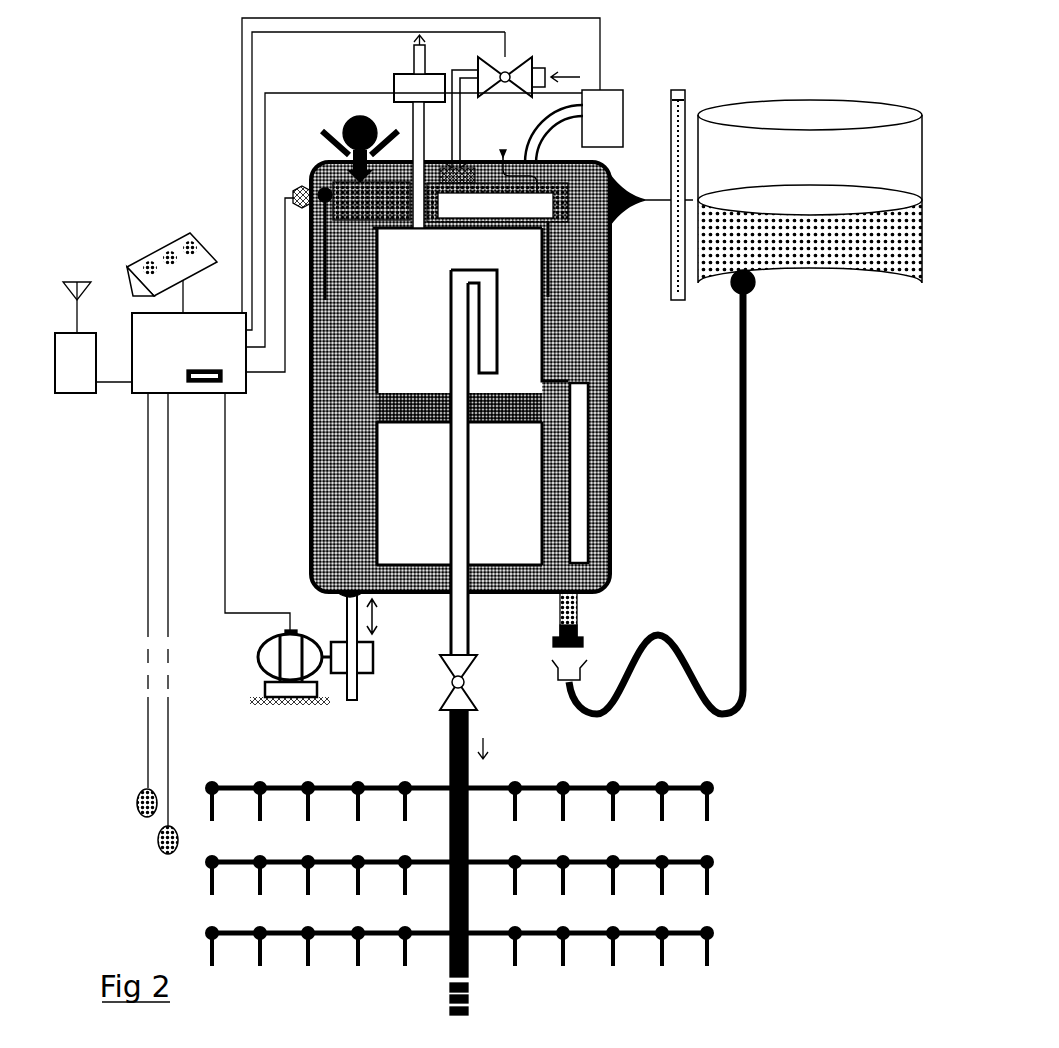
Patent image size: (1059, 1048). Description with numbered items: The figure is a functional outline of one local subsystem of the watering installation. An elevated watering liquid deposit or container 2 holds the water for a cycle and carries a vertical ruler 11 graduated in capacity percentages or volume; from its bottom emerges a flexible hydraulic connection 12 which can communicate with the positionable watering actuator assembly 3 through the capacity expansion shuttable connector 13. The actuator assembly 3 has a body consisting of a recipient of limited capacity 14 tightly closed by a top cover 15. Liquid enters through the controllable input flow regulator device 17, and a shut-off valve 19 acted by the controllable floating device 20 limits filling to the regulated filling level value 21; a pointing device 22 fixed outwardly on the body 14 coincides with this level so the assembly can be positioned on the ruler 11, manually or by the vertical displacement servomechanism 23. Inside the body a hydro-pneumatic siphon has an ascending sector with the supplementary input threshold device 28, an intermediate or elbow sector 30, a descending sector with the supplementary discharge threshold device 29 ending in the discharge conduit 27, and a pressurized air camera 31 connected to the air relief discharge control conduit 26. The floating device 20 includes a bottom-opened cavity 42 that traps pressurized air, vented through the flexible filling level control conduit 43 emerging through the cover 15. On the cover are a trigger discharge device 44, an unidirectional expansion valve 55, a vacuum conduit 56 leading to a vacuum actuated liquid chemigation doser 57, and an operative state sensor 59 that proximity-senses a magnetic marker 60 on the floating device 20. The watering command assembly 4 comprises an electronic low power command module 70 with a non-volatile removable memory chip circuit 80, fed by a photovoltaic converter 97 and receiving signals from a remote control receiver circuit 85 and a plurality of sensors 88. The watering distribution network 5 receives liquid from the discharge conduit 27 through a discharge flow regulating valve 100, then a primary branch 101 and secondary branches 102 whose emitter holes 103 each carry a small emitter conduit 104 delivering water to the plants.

The watering liquid deposit or container 2 is at (810, 191).
The positionable watering actuator assembly 3 is at (616, 473).
The watering command assembly 4 is at (92, 458).
The watering distribution network 5 is at (482, 1004).
The vertical ruler 11 is at (671, 173).
The flexible hydraulic connection 12 is at (662, 492).
The capacity expansion shuttable connector 13 is at (584, 636).
The recipient of limited capacity 14 is at (311, 430).
The top cover 15 is at (325, 140).
The controllable input flow regulator device 17 is at (505, 94).
The shut-off valve 19 is at (468, 167).
The controllable floating device 20 is at (371, 201).
The regulated filling level value 21 is at (660, 203).
The pointing device 22 is at (632, 192).
The vertical displacement servomechanism 23 is at (297, 549).
The air relief discharge control conduit 26 is at (414, 229).
The discharge conduit 27 is at (450, 628).
The supplementary input threshold device 28 is at (430, 393).
The supplementary discharge threshold device 29 is at (459, 493).
The intermediate or elbow sector 30 is at (447, 278).
The pressurized air camera 31 is at (470, 310).
The cavity 42 is at (497, 202).
The flexible filling level control conduit 43 is at (535, 190).
The trigger discharge device 44 is at (395, 78).
The unidirectional expansion valve 55 is at (351, 117).
The vacuum conduit 56 is at (559, 112).
The vacuum actuated liquid chemigation doser 57 is at (589, 131).
The operative state sensor 59 is at (298, 187).
The magnetic marker 60 is at (336, 244).
The electronic low power command module 70 is at (366, 205).
The non-volatile removable memory chip circuit 80 is at (200, 370).
The remote control receiver circuit 85 is at (93, 337).
The sensors 88 is at (142, 623).
The photovoltaic converter 97 is at (198, 262).
The discharge flow regulating valve 100 is at (475, 662).
The primary branch 101 is at (450, 753).
The secondary branches 102 is at (537, 785).
The emitter holes 103 is at (710, 783).
The emitter conduit 104 is at (708, 962).